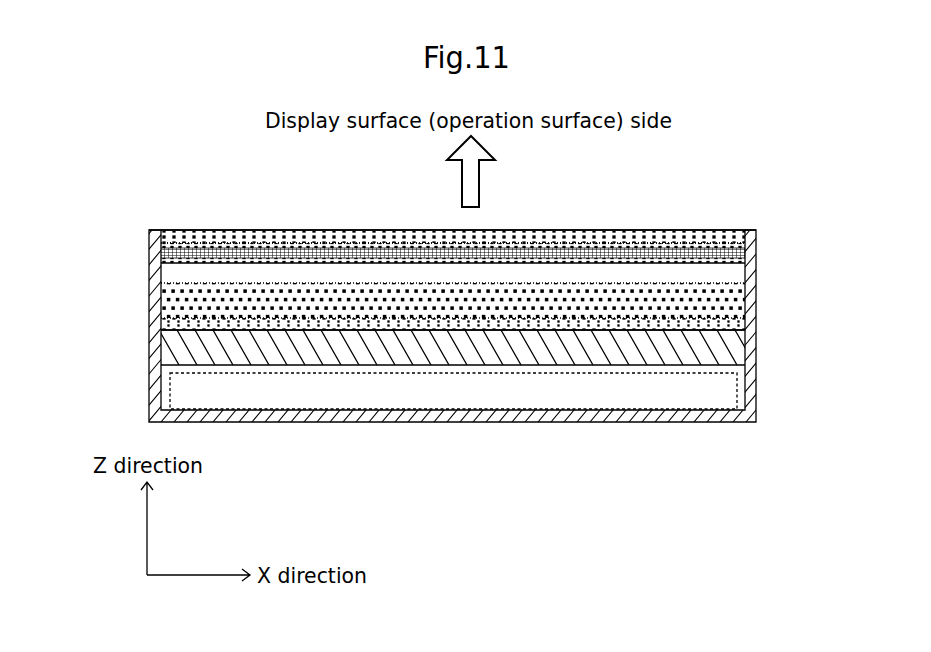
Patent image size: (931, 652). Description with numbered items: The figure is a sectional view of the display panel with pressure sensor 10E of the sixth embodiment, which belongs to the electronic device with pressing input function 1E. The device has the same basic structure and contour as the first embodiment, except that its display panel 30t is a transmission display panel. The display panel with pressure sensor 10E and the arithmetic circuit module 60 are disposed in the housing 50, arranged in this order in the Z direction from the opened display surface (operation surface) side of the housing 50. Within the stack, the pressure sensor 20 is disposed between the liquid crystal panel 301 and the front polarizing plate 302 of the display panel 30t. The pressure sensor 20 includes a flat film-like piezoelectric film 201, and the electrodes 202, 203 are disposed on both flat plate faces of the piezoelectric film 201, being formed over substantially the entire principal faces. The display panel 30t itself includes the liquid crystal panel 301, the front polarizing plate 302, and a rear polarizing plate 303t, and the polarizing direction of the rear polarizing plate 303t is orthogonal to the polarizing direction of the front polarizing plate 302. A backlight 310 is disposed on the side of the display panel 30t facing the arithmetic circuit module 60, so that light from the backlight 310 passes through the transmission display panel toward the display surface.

The electronic device with pressing input function 1E is at (219, 197).
The display panel with pressure sensor 10E is at (668, 231).
The pressure sensor 20 is at (815, 229).
The electrode 202 is at (747, 237).
The piezoelectric film 201 is at (747, 253).
The electrode 203 is at (747, 263).
The display panel 30t is at (78, 262).
The front polarizing plate 302 is at (166, 237).
The liquid crystal panel 301 is at (166, 299).
The rear polarizing plate 303t is at (165, 327).
The backlight 310 is at (166, 345).
The housing 50 is at (752, 399).
The arithmetic circuit module 60 is at (661, 403).